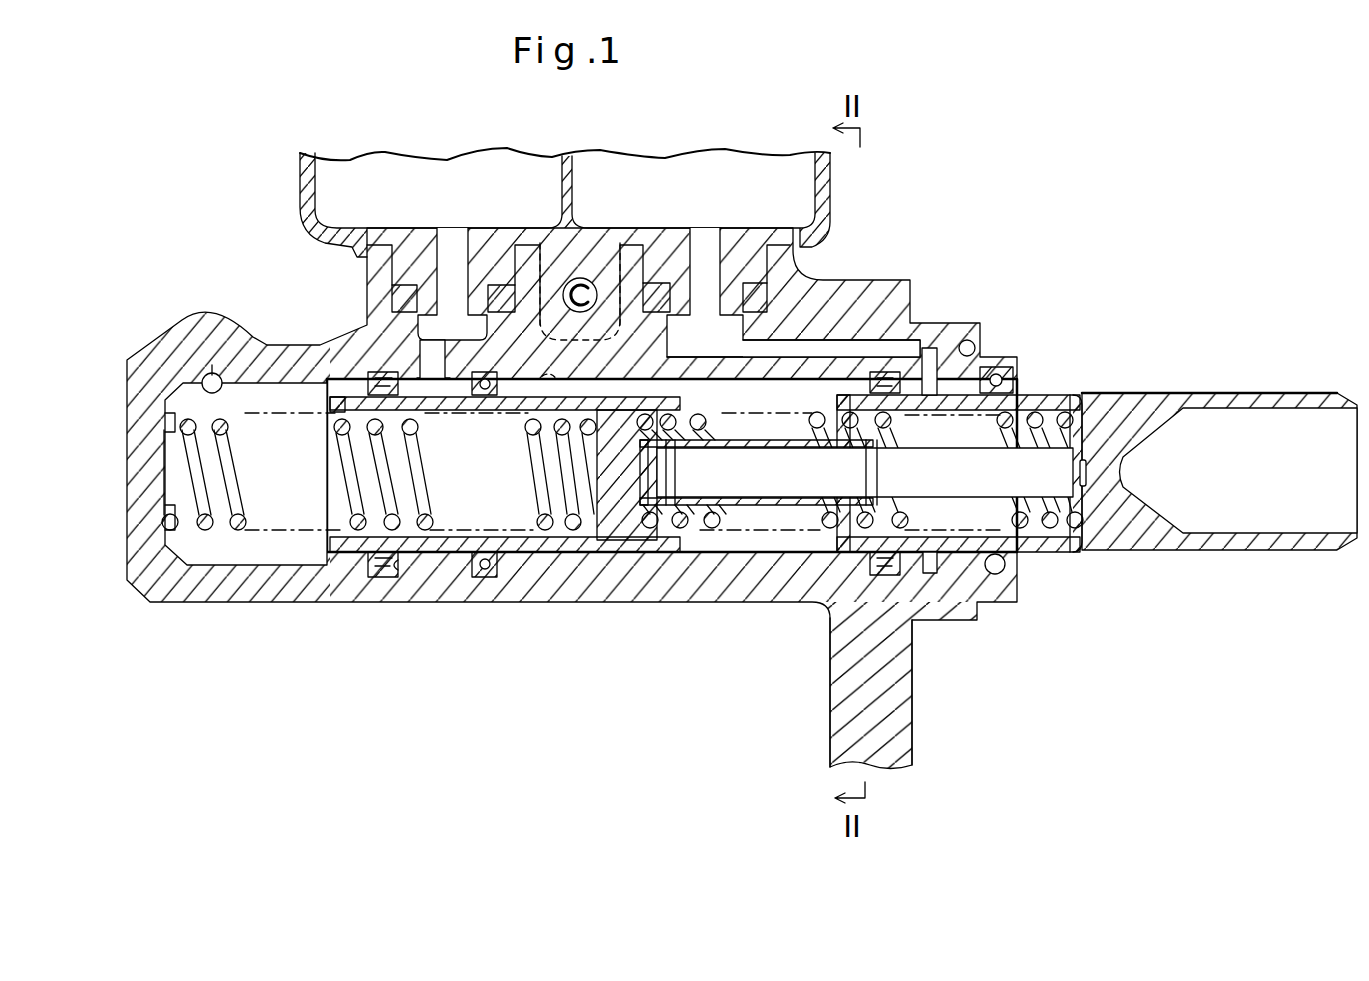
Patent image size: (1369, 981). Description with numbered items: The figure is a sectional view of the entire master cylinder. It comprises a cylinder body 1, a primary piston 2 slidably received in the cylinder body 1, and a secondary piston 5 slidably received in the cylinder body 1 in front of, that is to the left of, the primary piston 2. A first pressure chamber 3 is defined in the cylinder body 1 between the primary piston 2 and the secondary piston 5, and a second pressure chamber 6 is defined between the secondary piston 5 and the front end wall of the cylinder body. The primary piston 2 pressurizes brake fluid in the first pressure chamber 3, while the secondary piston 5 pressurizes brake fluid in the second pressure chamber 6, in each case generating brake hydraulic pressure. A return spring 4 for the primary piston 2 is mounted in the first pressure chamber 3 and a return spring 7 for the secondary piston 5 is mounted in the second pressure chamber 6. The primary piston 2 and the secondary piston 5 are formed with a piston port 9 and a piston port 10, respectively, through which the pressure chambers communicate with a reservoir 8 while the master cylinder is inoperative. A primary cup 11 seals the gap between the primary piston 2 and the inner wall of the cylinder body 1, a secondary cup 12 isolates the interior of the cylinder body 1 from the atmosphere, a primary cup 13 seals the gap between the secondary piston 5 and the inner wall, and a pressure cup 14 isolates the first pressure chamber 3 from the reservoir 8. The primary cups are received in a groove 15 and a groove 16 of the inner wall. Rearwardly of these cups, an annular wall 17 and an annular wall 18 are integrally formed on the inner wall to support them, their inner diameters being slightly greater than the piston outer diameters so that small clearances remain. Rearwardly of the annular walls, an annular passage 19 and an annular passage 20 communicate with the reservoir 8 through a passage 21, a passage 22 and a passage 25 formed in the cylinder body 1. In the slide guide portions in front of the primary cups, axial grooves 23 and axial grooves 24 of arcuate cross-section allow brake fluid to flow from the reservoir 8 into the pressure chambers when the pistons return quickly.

The cylinder body 1 is at (780, 228).
The primary piston 2 is at (1145, 410).
The first pressure chamber 3 is at (720, 540).
The return spring 4 is at (810, 523).
The secondary piston 5 is at (623, 527).
The second pressure chamber 6 is at (282, 555).
The return spring 7 is at (237, 537).
The reservoir 8 is at (305, 182).
The piston port 9 is at (940, 430).
The piston port 10 is at (347, 397).
The primary cup 11 is at (830, 705).
The secondary cup 12 is at (210, 372).
The primary cup 13 is at (390, 570).
The pressure cup 14 is at (490, 572).
The groove 15 is at (875, 565).
The groove 16 is at (360, 568).
The annular wall 17 is at (908, 560).
The annular wall 18 is at (405, 570).
The annular passage 19 is at (929, 360).
The annular passage 20 is at (400, 283).
The passage 21 is at (880, 343).
The passage 22 is at (433, 360).
The axial groove 23 is at (873, 387).
The axial groove 24 is at (333, 397).
The passage 25 is at (990, 375).